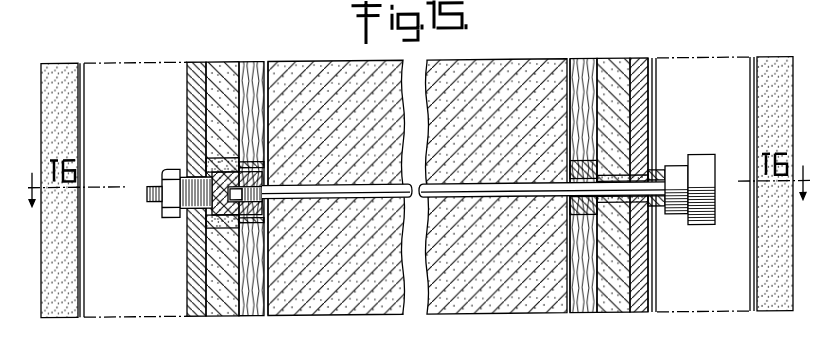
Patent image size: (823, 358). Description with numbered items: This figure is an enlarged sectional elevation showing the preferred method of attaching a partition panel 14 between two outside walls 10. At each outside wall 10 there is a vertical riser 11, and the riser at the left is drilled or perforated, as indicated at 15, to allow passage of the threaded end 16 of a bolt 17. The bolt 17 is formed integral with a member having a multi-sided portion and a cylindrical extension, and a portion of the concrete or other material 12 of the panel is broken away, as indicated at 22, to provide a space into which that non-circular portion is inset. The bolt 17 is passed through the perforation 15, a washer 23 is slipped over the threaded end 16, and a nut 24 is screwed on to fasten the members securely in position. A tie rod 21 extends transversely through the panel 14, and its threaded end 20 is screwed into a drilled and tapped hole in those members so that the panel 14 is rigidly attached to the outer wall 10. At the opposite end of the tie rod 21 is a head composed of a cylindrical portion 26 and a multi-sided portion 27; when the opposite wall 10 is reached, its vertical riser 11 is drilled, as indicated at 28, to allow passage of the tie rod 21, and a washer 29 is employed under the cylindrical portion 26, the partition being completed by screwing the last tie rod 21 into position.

The outside wall 10 is at (53, 79).
The vertical riser 11 is at (132, 79).
The concrete or other material 12 is at (221, 304).
The panel 14 is at (446, 88).
The perforation 15 is at (192, 160).
The threaded end 16 is at (148, 196).
The bolt 17 is at (190, 241).
The threaded end 20 is at (248, 164).
The tie rod 21 is at (320, 190).
The broken-away portion 22 is at (208, 163).
The washer 23 is at (188, 221).
The nut 24 is at (168, 174).
The cylindrical portion 26 is at (678, 221).
The non-cylindrical or multi-sided portion 27 is at (701, 232).
The drilled hole 28 is at (651, 151).
The washer 29 is at (660, 177).